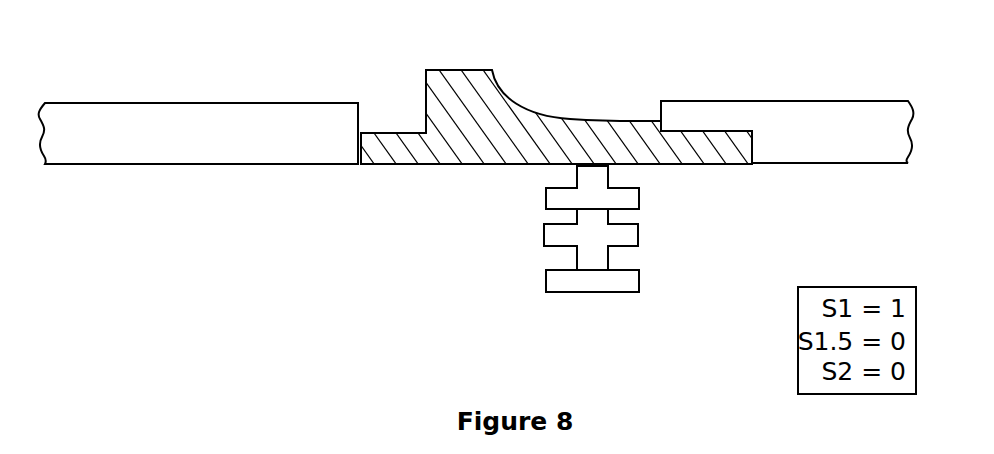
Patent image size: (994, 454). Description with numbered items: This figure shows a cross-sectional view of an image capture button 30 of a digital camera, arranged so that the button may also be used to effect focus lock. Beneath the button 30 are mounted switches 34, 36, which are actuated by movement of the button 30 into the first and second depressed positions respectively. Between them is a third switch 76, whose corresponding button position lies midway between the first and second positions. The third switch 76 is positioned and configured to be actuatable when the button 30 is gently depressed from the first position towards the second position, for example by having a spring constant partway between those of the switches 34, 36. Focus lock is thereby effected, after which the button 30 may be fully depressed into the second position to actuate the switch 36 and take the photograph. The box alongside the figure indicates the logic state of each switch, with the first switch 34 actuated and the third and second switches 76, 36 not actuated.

The image capture button 30 is at (525, 125).
The switch 34 is at (544, 197).
The third switch 76 is at (640, 234).
The switch 36 is at (544, 283).